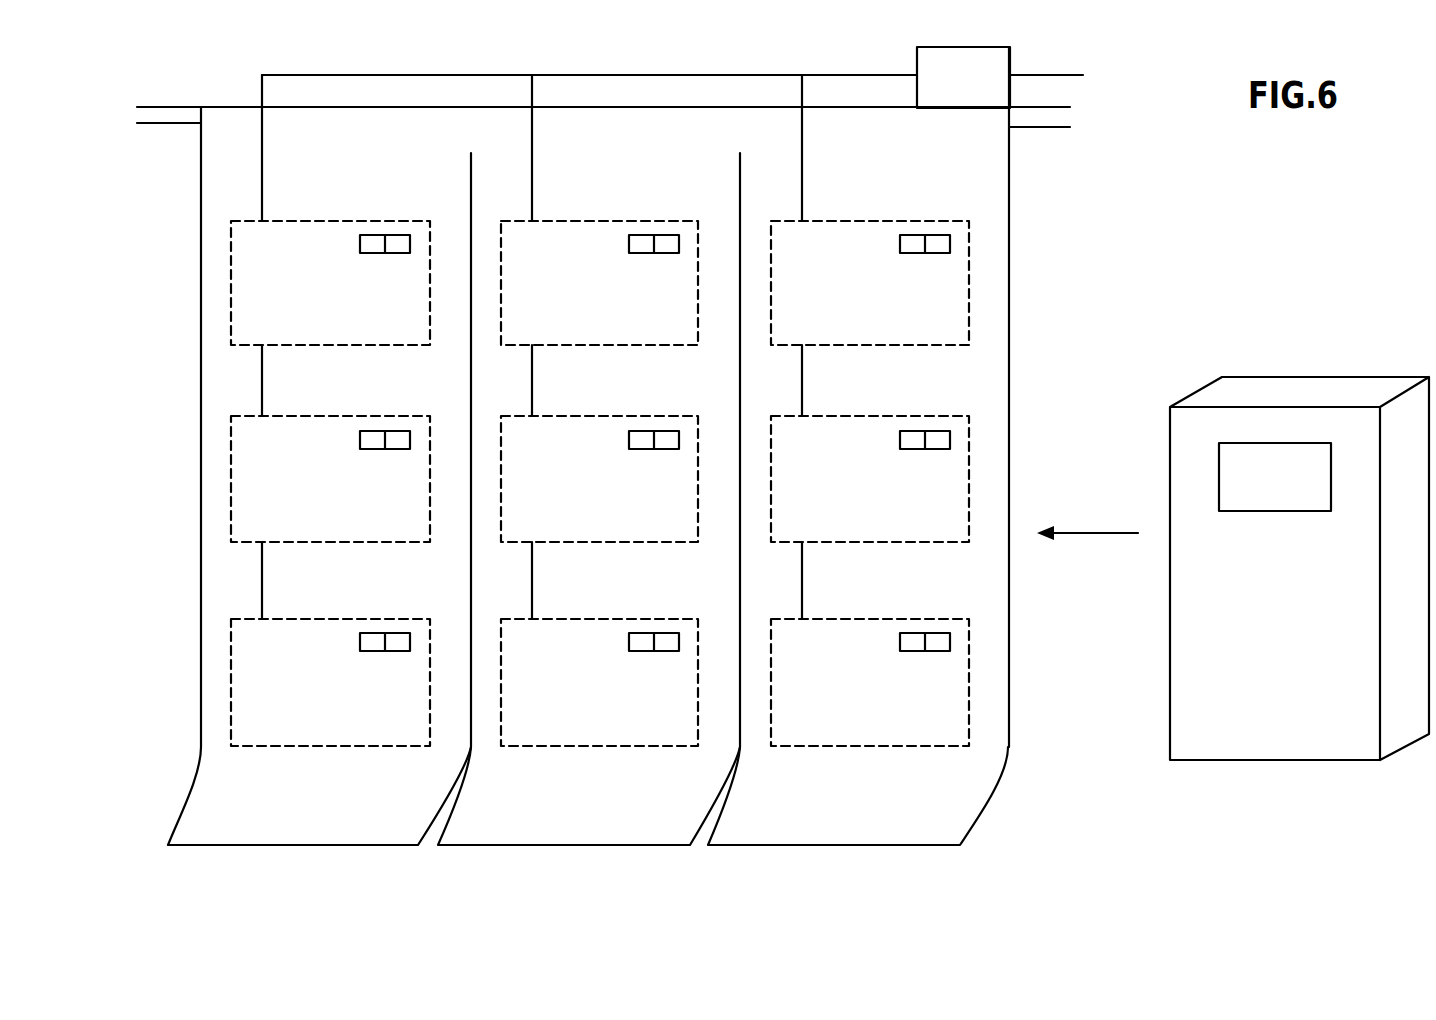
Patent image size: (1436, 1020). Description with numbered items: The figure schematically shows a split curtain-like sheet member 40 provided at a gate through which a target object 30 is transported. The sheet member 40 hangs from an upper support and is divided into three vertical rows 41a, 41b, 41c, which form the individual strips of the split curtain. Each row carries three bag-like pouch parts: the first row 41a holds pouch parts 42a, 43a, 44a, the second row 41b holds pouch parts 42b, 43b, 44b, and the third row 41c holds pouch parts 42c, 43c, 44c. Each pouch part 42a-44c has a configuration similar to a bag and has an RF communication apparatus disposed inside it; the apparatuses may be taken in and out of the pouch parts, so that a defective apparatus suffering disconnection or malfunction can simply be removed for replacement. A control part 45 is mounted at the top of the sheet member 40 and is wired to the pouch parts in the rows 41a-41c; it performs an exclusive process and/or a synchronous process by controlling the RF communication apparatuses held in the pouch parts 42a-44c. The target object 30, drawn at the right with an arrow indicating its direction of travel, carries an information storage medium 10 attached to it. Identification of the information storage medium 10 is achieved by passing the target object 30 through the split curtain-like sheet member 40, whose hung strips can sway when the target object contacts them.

The information storage medium 10 is at (1296, 443).
The target object 30 is at (1170, 703).
The split curtain-like sheet member 40 is at (1011, 173).
The row 41a is at (295, 845).
The row 41b is at (567, 845).
The row 41c is at (837, 845).
The pouch part 42a is at (354, 221).
The pouch part 42b is at (626, 221).
The pouch part 42c is at (896, 221).
The pouch part 43a is at (354, 416).
The pouch part 43b is at (626, 416).
The pouch part 43c is at (896, 416).
The pouch part 44a is at (354, 619).
The pouch part 44b is at (626, 619).
The pouch part 44c is at (896, 619).
The control part 45 is at (1011, 55).